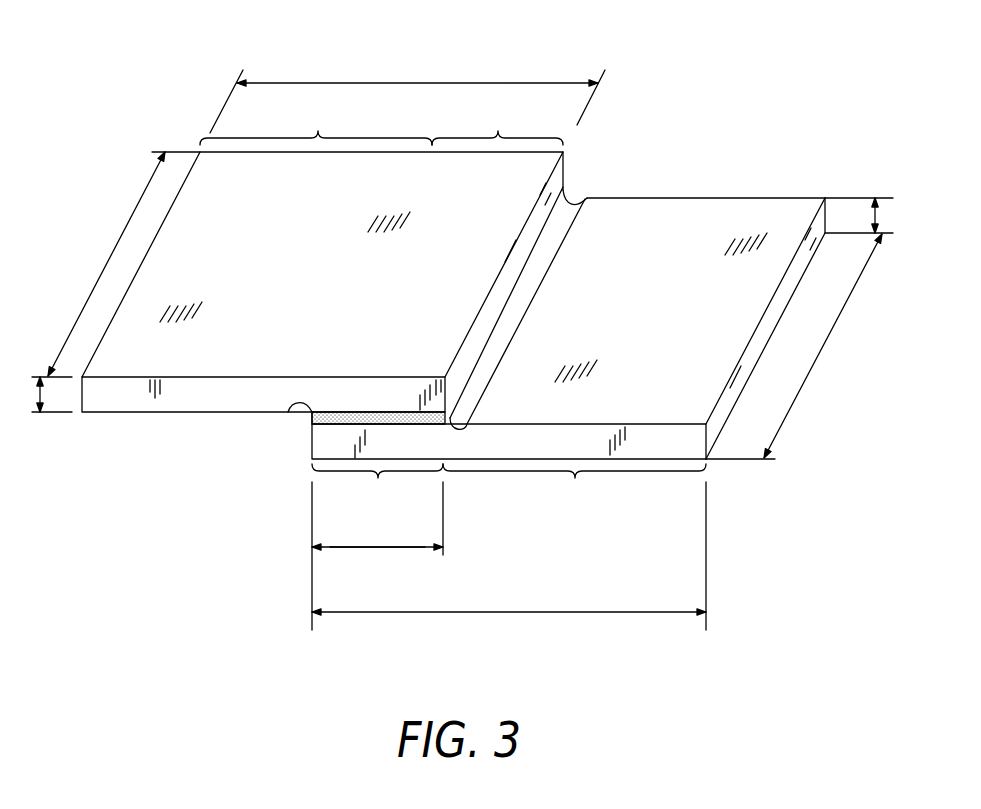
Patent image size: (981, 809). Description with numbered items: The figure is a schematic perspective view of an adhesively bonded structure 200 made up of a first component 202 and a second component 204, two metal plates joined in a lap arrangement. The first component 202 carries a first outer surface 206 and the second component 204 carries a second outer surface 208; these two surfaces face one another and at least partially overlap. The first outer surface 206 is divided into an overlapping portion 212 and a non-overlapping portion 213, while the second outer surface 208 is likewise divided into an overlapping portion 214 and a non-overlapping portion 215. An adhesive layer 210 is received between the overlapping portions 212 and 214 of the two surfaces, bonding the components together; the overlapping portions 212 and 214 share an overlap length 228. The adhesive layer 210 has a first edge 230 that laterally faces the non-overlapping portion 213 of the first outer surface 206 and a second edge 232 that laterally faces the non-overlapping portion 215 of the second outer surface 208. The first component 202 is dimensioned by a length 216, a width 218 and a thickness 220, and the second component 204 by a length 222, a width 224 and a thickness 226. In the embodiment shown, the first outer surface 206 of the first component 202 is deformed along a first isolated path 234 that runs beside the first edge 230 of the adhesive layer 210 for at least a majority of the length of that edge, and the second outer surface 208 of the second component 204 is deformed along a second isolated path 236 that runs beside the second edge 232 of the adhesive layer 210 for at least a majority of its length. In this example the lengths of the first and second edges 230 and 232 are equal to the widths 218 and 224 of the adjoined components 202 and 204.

The adhesively bonded structure 200 is at (742, 80).
The first component 202 is at (775, 194).
The second component 204 is at (198, 146).
The first outer surface 206 is at (708, 263).
The second outer surface 208 is at (137, 413).
The adhesive layer 210 is at (313, 428).
The overlapping portion of first outer surface 212 is at (378, 477).
The non-overlapping portion of first outer surface 213 is at (575, 477).
The overlapping portion of second outer surface 214 is at (498, 132).
The non-overlapping portion of second outer surface 215 is at (318, 132).
The length 216 is at (535, 613).
The width 218 is at (830, 335).
The thickness 220 is at (880, 218).
The length 222 is at (462, 83).
The width 224 is at (116, 241).
The thickness 226 is at (40, 392).
The overlap length 228 is at (408, 548).
The first edge 230 is at (565, 194).
The second edge 232 is at (395, 412).
The first isolated path 234 is at (557, 240).
The second isolated path 236 is at (289, 412).